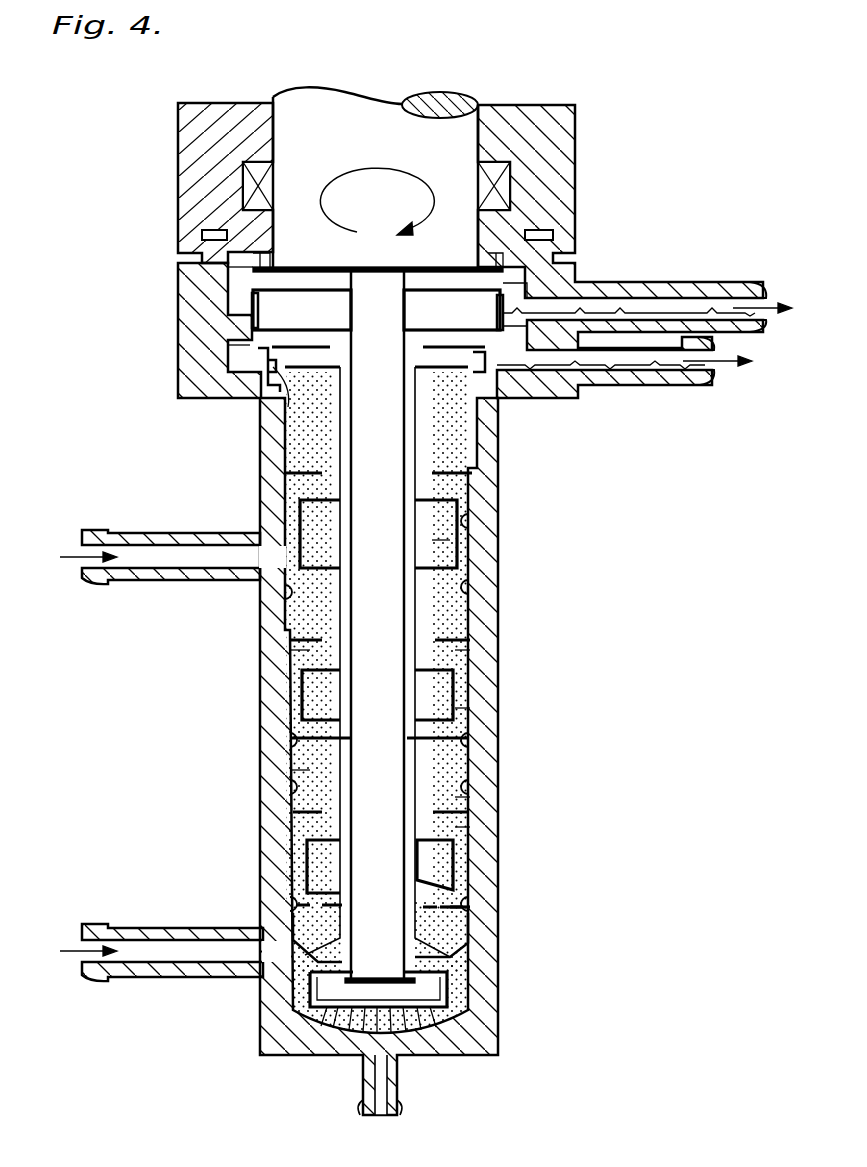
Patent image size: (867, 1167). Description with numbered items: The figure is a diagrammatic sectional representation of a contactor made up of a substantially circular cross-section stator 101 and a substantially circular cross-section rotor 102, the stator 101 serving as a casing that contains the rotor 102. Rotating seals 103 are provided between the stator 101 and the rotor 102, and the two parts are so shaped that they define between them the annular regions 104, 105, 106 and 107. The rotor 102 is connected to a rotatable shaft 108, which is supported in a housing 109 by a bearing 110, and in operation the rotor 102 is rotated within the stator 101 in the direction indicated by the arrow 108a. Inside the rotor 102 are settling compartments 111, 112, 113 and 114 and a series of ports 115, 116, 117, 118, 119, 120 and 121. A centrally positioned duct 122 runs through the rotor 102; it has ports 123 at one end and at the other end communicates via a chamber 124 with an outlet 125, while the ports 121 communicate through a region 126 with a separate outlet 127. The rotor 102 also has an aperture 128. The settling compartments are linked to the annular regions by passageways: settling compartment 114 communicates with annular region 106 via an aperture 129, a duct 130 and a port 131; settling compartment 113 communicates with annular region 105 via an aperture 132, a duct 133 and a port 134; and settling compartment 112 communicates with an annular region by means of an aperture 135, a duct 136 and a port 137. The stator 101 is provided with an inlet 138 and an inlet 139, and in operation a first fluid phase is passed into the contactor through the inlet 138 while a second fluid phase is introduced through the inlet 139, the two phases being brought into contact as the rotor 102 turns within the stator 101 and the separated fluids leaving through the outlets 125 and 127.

The stator 101 is at (275, 705).
The rotor 102 is at (305, 857).
The rotating seals 103 is at (300, 450).
The annular region 104 is at (465, 1000).
The annular region 105 is at (463, 865).
The annular region 106 is at (470, 708).
The annular region 107 is at (460, 540).
The rotatable shaft 108 is at (400, 120).
The arrow 108a is at (392, 178).
The housing 109 is at (565, 165).
The bearing 110 is at (236, 177).
The settling compartment 111 is at (470, 970).
The settling compartment 112 is at (470, 827).
The settling compartment 113 is at (470, 652).
The settling compartment 114 is at (480, 468).
The port 115 is at (465, 822).
The port 116 is at (302, 680).
The port 117 is at (320, 508).
The port 118 is at (295, 900).
The port 119 is at (475, 742).
The port 120 is at (285, 592).
The ports 121 is at (285, 403).
The centrally positioned duct 122 is at (325, 1010).
The ports 123 is at (350, 1010).
The chamber 124 is at (495, 285).
The outlet 125 is at (737, 282).
The region 126 is at (238, 340).
The outlet 127 is at (680, 392).
The aperture 128 is at (380, 1080).
The aperture 129 is at (288, 407).
The duct 130 is at (302, 652).
The port 131 is at (300, 770).
The aperture 132 is at (478, 574).
The duct 133 is at (470, 797).
The port 134 is at (472, 898).
The aperture 135 is at (292, 740).
The duct 136 is at (352, 784).
The port 137 is at (318, 962).
The inlet 138 is at (130, 978).
The inlet 139 is at (130, 580).